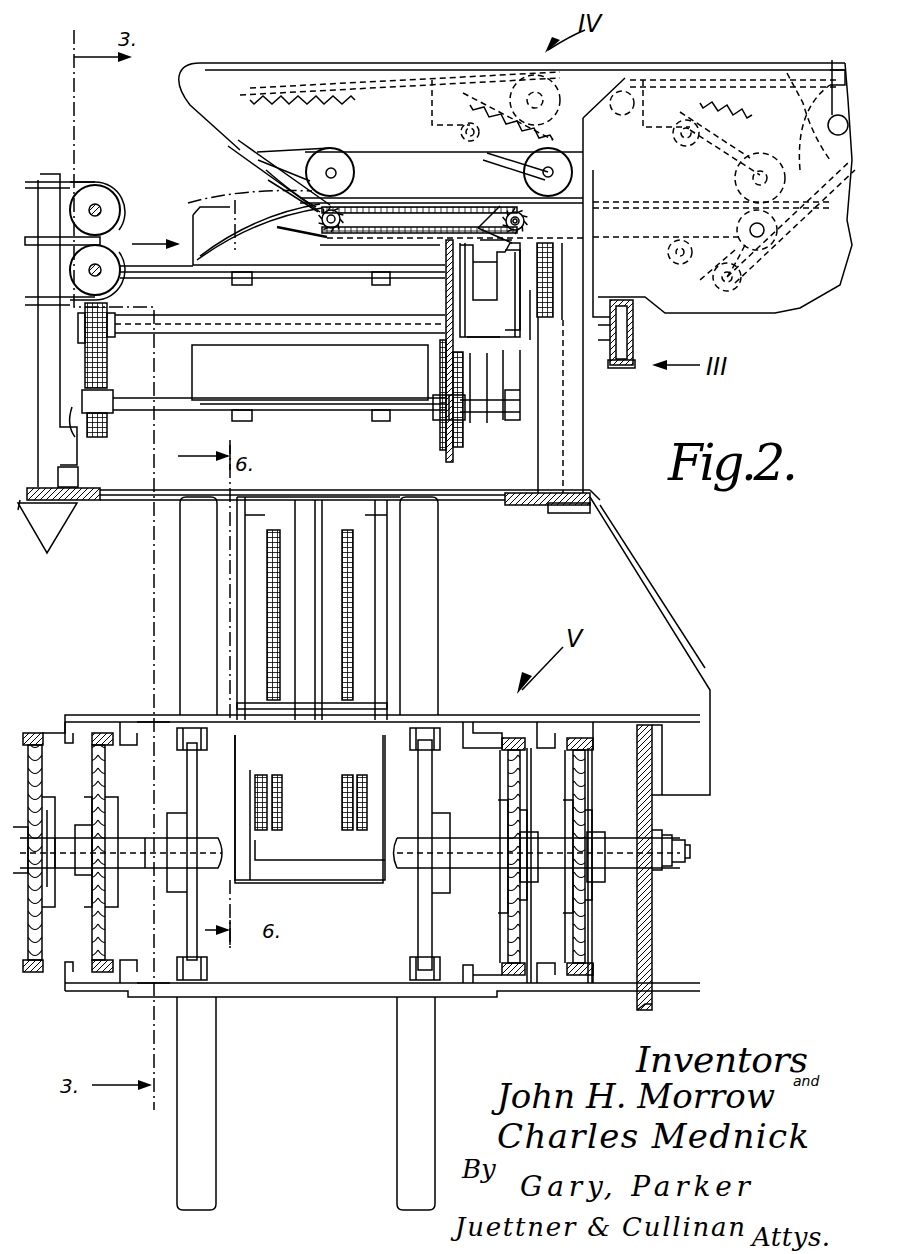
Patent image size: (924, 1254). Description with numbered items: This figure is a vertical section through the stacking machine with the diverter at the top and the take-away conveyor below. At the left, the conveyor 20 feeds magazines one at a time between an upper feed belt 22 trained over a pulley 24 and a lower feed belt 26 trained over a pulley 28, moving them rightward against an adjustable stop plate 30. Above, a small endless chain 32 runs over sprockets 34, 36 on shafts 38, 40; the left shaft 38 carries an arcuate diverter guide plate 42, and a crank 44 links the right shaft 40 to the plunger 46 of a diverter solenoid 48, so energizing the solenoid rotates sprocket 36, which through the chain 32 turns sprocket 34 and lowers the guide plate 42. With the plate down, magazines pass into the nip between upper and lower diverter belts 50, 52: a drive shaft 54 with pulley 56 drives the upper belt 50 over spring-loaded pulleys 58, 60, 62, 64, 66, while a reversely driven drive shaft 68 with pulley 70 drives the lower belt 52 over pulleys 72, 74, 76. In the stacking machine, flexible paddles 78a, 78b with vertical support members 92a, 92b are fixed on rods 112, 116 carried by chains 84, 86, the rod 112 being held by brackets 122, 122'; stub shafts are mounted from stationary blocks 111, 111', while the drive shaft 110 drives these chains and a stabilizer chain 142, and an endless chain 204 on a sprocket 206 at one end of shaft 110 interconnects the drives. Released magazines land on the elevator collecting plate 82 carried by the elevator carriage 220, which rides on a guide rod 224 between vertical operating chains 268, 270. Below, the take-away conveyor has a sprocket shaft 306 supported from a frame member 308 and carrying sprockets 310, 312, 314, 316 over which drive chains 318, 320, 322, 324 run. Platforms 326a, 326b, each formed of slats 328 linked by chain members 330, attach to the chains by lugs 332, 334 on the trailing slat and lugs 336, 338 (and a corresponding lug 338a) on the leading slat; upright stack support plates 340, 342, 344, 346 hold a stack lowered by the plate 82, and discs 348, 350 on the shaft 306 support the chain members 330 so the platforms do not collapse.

The conveyor 20 is at (112, 175).
The upper feed belt 22 is at (76, 180).
The pulley 24 is at (110, 200).
The lower feed belt 26 is at (133, 240).
The pulley 28 is at (112, 278).
The adjustable stop plate 30 is at (443, 305).
The endless chain 32 is at (420, 192).
The sprocket 34 is at (302, 238).
The sprocket 36 is at (530, 223).
The shaft 38 is at (345, 210).
The shaft 40 is at (510, 210).
The arcuate diverter guide plate 42 is at (237, 202).
The crank 44 is at (490, 233).
The plunger 46 is at (485, 275).
The diverter solenoid 48 is at (494, 319).
The upper diverter belt 50 is at (258, 158).
The lower diverter belt 52 is at (280, 186).
The drive shaft 54 is at (832, 62).
The pulley 56 is at (787, 73).
The spring loaded pulley 58 is at (520, 85).
The spring loaded pulley 60 is at (295, 95).
The spring loaded pulley 62 is at (338, 158).
The spring loaded pulley 64 is at (572, 175).
The spring loaded pulley 66 is at (773, 150).
The drive shaft 68 is at (764, 230).
The pulley 70 is at (740, 233).
The pulley 72 is at (742, 283).
The pulley 74 is at (672, 264).
The pulley 76 is at (330, 245).
The flexible paddle 78a is at (343, 403).
The flexible paddle 78b is at (362, 278).
The elevator collecting plate 82 is at (360, 706).
The roller or silent chain 84 is at (106, 350).
The roller or silent chain 86 is at (440, 370).
The vertical support member 92a is at (300, 379).
The vertical support member 92b is at (190, 224).
The drive shaft 110 is at (283, 317).
The stationary block 111 is at (77, 435).
The stationary block 111' is at (500, 400).
The rod 112 is at (288, 412).
The rod 116 is at (190, 278).
The bracket 122 is at (468, 432).
The bracket 122' is at (113, 440).
The roller or silent chain 142 is at (555, 282).
The endless chain 204 is at (620, 370).
The sprocket 206 is at (636, 357).
The elevator carriage 220 is at (295, 800).
The vertical guide rod 224 is at (313, 503).
The first operating chain 268 is at (350, 635).
The second operating chain 270 is at (270, 625).
The sprocket shaft 306 is at (157, 860).
The frame member 308 is at (653, 938).
The chain sprocket 310 is at (43, 783).
The chain sprocket 312 is at (106, 775).
The chain sprocket 314 is at (506, 776).
The chain sprocket 316 is at (586, 770).
The endless drive chain 318 is at (25, 733).
The endless drive chain 320 is at (93, 733).
The endless drive chain 322 is at (510, 737).
The endless drive chain 324 is at (600, 742).
The platform member 326a is at (471, 712).
The platform member 326b is at (330, 1002).
The slat 328 is at (158, 728).
The chain member 330 is at (214, 750).
The lug 332 is at (58, 728).
The lug 334 is at (560, 737).
The lug 336 is at (128, 728).
The lug 338 is at (488, 722).
The bracket 338a is at (483, 963).
The upright stack support plate 340 is at (192, 542).
The upright stack support plate 342 is at (430, 550).
The upright stack support plate 344 is at (207, 1117).
The upright stack support plate 346 is at (400, 1095).
The disc-like member 348 is at (188, 787).
The disc-like member 350 is at (425, 800).